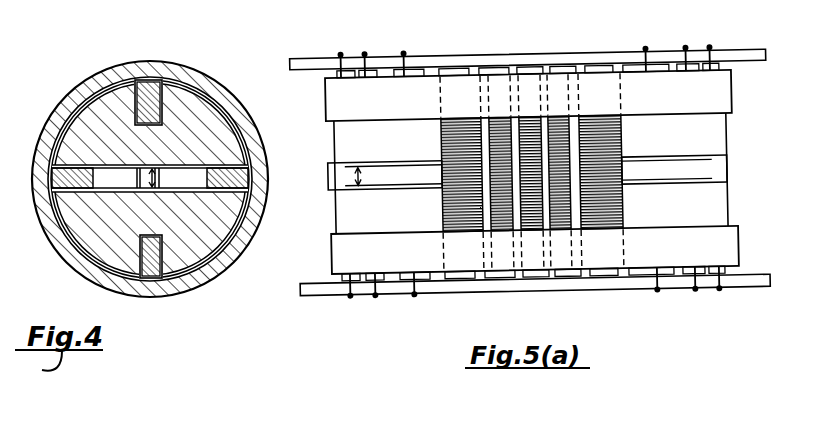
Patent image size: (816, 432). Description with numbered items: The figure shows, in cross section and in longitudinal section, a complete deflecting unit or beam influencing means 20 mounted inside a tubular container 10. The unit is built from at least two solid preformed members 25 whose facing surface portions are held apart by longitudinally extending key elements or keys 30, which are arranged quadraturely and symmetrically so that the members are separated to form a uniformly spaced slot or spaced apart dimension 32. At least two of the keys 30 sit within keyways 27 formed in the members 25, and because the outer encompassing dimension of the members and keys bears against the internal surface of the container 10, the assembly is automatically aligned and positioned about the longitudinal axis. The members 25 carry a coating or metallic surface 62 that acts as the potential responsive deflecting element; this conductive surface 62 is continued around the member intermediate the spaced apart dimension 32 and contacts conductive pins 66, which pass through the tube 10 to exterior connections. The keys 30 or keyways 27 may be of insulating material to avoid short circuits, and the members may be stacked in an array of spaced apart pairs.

In FIG. 4, the container 10 is at (55, 246).
In FIG. 5A, the container 10 is at (737, 51).
In FIG. 5A, the beam influencing or deflection means 20 is at (466, 34).
In FIG. 4, the preformed member 25 is at (88, 130).
In FIG. 5A, the preformed member 25 is at (340, 137).
In FIG. 4, the keyway 27 is at (168, 100).
In FIG. 4, the key element 30 is at (227, 170).
In FIG. 5A, the key element 30 is at (730, 102).
In FIG. 4, the spaced apart dimension 32 is at (158, 191).
In FIG. 5A, the spaced apart dimension 32 is at (356, 172).
In FIG. 4, the metallic surface 62 is at (104, 82).
In FIG. 5A, the metallic surface 62 is at (590, 70).
In FIG. 5A, the conductive pin 66 is at (348, 298).